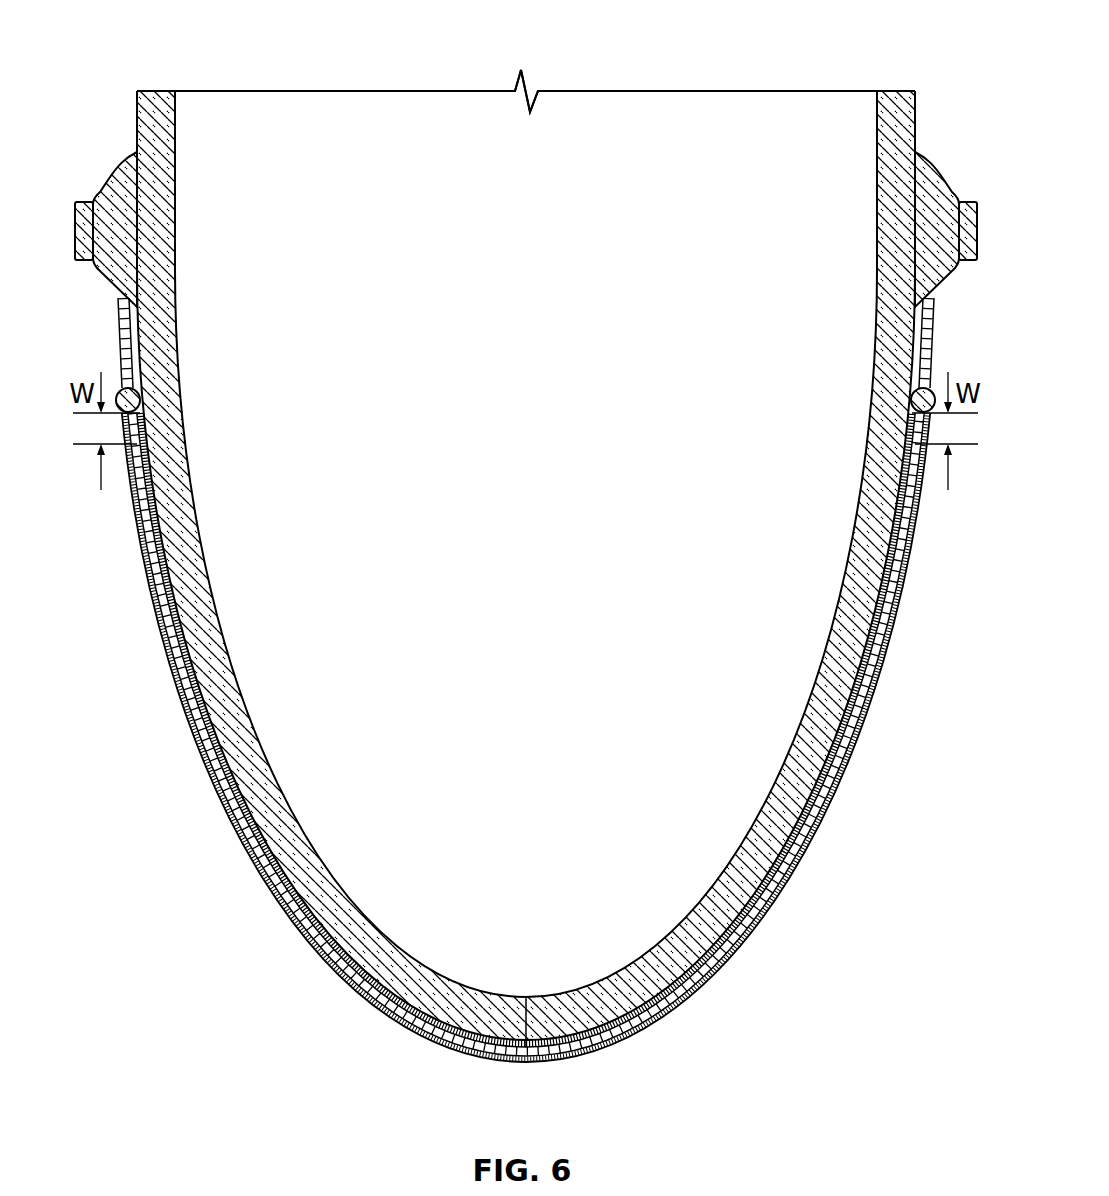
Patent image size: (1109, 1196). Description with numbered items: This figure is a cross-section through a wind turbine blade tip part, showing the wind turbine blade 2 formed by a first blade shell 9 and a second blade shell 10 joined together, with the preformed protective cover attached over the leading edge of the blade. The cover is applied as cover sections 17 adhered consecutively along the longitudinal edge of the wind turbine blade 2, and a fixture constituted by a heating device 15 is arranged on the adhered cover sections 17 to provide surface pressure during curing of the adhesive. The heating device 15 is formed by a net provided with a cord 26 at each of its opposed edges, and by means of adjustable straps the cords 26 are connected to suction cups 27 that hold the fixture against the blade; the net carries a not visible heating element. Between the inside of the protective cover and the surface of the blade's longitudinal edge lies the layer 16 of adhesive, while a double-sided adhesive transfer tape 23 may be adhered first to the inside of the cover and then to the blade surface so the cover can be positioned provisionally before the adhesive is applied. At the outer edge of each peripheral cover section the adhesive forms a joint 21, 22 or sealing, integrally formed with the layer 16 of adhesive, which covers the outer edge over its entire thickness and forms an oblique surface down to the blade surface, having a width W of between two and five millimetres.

The wind turbine blade 2 is at (650, 75).
The first blade shell 9 is at (153, 103).
The second blade shell 10 is at (890, 100).
The suction cup 27 is at (928, 167).
The cord 26 is at (918, 403).
The joint 21 is at (143, 428).
The joint 22 is at (903, 432).
The layer of adhesive 16 is at (158, 578).
The cover section 17 is at (187, 730).
The heating device 15 is at (237, 853).
The double-sided adhesive transfer tape 23 is at (540, 1043).